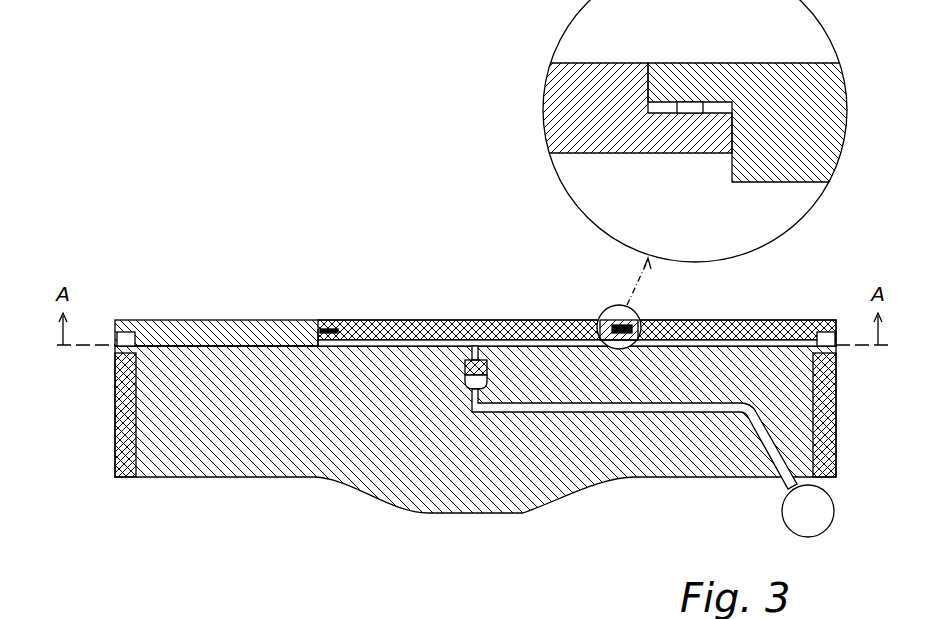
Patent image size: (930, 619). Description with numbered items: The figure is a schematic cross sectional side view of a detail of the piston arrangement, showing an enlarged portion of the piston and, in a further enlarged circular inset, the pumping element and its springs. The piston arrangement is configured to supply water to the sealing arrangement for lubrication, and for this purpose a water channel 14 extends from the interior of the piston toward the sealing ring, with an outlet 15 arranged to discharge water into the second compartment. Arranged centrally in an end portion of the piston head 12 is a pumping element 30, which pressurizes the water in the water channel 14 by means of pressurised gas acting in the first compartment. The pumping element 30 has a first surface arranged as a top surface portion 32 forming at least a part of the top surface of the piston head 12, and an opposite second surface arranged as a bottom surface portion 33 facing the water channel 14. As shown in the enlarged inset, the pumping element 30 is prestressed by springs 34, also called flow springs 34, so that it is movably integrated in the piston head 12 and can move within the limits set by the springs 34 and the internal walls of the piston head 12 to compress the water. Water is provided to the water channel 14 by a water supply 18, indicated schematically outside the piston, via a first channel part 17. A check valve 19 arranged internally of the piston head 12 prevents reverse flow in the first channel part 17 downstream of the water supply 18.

The piston head 12 is at (766, 72).
The water channel 14 is at (198, 345).
The outlet 15 is at (117, 338).
The first channel part 17 is at (477, 405).
The water supply 18 is at (795, 512).
The check valve 19 is at (463, 368).
The pumping element 30 is at (598, 80).
The top surface portion 32 is at (526, 320).
The bottom surface portion 33 is at (398, 338).
The springs 34 is at (686, 100).